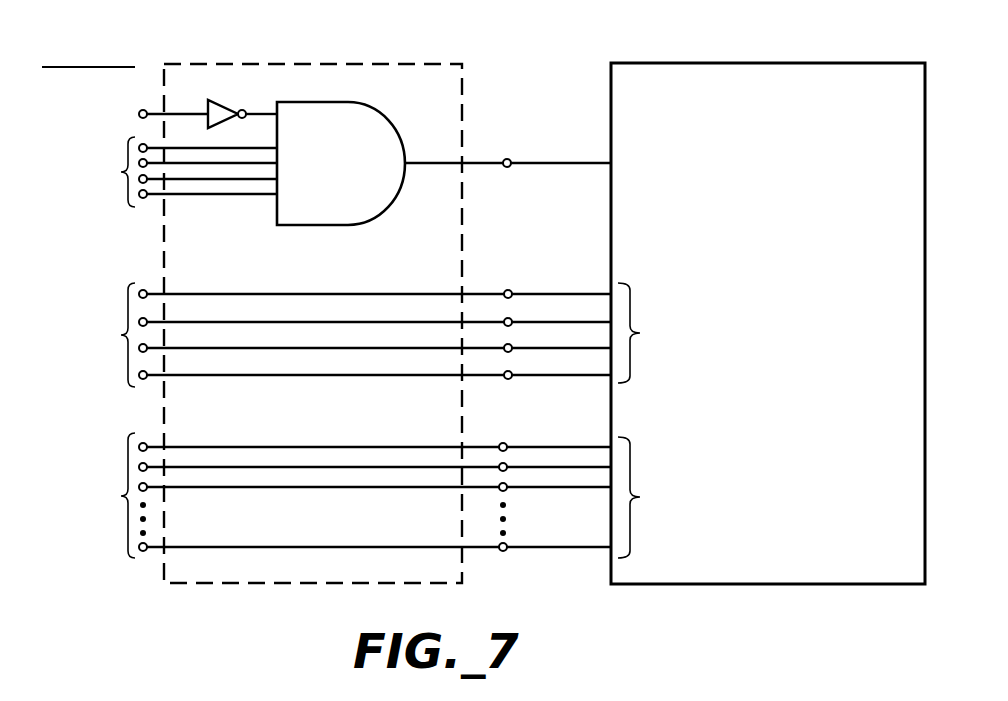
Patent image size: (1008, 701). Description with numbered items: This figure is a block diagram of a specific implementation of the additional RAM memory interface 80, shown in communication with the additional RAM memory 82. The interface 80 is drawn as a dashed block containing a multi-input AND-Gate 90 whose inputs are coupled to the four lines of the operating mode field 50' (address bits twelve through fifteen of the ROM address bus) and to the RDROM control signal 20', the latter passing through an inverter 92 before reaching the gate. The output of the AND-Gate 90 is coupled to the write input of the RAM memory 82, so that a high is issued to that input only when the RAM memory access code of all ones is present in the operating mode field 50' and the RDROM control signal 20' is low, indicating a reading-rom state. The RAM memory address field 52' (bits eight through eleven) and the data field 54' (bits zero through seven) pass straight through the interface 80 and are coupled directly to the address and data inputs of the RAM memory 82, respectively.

The additional RAM memory interface 80 is at (350, 64).
The additional RAM memory 82 is at (762, 63).
The multi-input AND-Gate 90 is at (385, 117).
The inverter 92 is at (220, 98).
The RDROM control signal 20' is at (125, 94).
The operating mode field 50' is at (153, 181).
The RAM memory address field 52' is at (392, 337).
The data field 54' is at (367, 495).